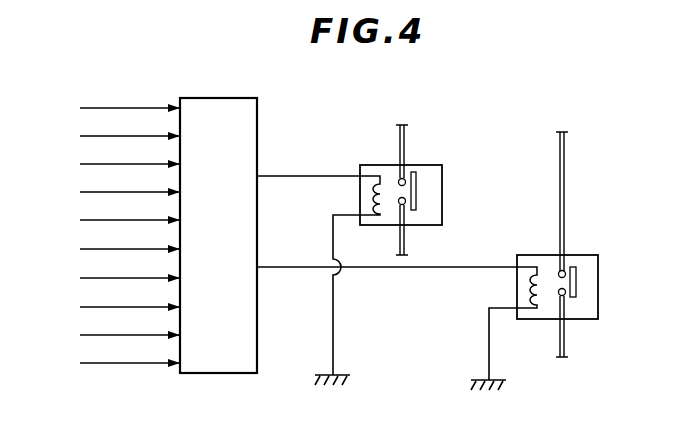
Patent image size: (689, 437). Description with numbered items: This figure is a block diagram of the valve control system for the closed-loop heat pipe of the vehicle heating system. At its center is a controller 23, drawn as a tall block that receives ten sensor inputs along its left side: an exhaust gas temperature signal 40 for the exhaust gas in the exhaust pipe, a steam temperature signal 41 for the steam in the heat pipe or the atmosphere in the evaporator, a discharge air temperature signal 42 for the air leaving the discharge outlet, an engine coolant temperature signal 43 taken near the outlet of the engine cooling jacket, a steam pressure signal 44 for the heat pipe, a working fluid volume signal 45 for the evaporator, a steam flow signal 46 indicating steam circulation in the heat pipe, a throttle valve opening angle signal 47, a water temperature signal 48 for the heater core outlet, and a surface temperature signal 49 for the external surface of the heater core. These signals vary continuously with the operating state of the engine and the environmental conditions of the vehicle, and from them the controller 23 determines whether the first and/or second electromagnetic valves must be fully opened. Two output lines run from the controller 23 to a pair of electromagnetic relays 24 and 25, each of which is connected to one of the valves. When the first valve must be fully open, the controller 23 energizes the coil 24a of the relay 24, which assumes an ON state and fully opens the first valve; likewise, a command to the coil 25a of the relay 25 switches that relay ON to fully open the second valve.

The controller 23 is at (232, 98).
The electromagnetic relay 24 is at (581, 260).
The coil 24a is at (543, 319).
The electromagnetic relay 25 is at (411, 178).
The coil 25a is at (378, 175).
The exhaust gas temperature signal 40 is at (111, 108).
The steam temperature signal 41 is at (111, 136).
The discharge air temperature signal 42 is at (111, 164).
The engine coolant temperature signal 43 is at (111, 192).
The steam pressure signal 44 is at (111, 220).
The working fluid volume signal 45 is at (111, 249).
The steam flow signal 46 is at (111, 278).
The throttle valve opening angle signal 47 is at (111, 307).
The water temperature signal 48 is at (111, 335).
The surface temperature signal 49 is at (111, 363).